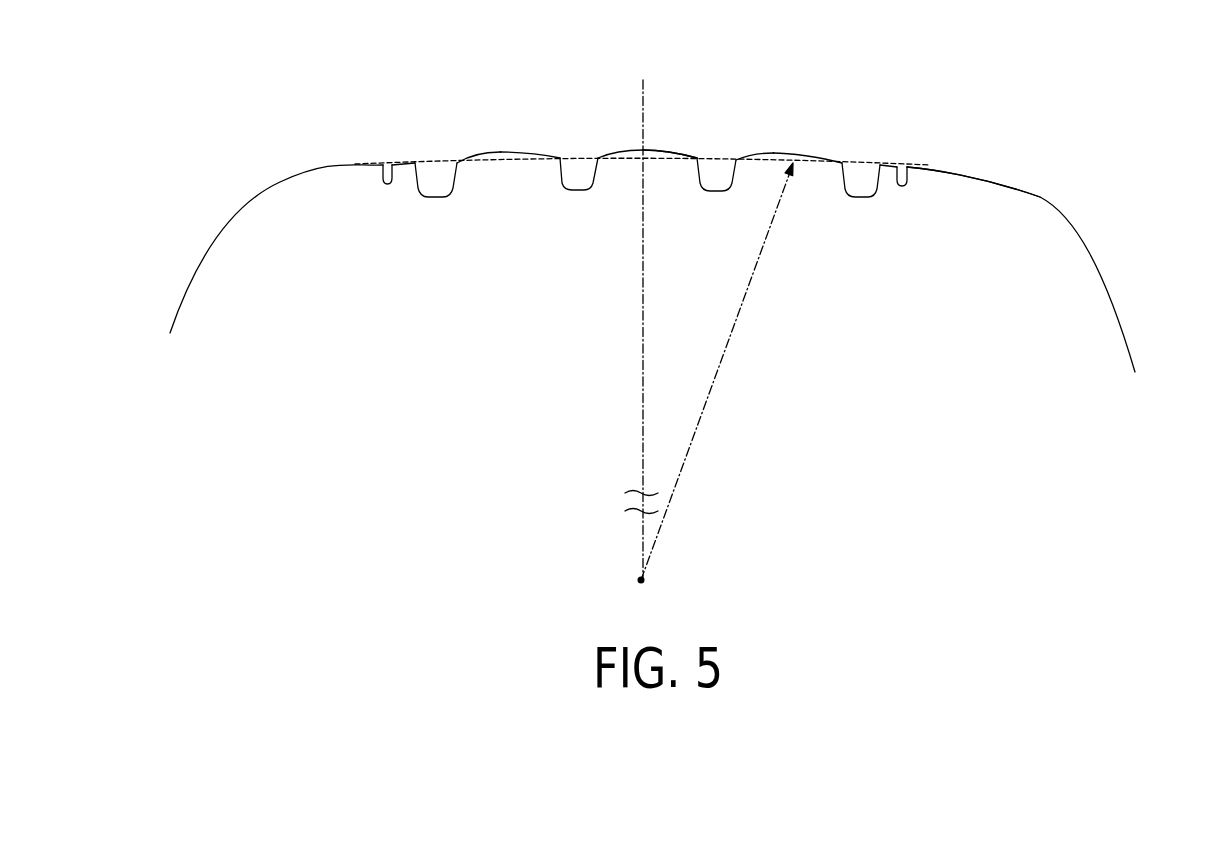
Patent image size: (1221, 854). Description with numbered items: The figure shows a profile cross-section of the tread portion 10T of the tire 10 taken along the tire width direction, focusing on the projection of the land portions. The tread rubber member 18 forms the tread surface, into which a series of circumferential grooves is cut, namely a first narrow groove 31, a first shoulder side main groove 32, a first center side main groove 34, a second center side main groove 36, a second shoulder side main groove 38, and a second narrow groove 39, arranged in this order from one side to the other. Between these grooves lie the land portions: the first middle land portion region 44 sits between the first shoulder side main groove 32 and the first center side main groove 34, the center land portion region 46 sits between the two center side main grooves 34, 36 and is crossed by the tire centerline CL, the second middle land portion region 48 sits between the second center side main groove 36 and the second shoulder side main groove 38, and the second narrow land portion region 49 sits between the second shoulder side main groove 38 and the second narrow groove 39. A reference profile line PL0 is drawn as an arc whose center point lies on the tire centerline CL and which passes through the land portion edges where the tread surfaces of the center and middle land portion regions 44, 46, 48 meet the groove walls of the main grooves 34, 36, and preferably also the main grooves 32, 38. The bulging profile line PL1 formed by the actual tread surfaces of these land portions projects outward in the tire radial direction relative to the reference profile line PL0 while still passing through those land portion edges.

The tire 10 is at (898, 103).
The tread portion 10T is at (1045, 195).
The tread rubber member 18 is at (665, 168).
The first narrow groove 31 is at (386, 163).
The first shoulder side main groove 32 is at (441, 178).
The first center side main groove 34 is at (580, 170).
The second center side main groove 36 is at (716, 172).
The second shoulder side main groove 38 is at (858, 178).
The second narrow groove 39 is at (903, 166).
The first middle land portion region 44 is at (510, 178).
The center land portion region 46 is at (617, 180).
The second middle land portion region 48 is at (769, 168).
The second narrow land portion region 49 is at (927, 183).
The reference profile line PL0 is at (535, 165).
The bulging profile line PL1 is at (484, 152).
The tire centerline CL is at (709, 317).